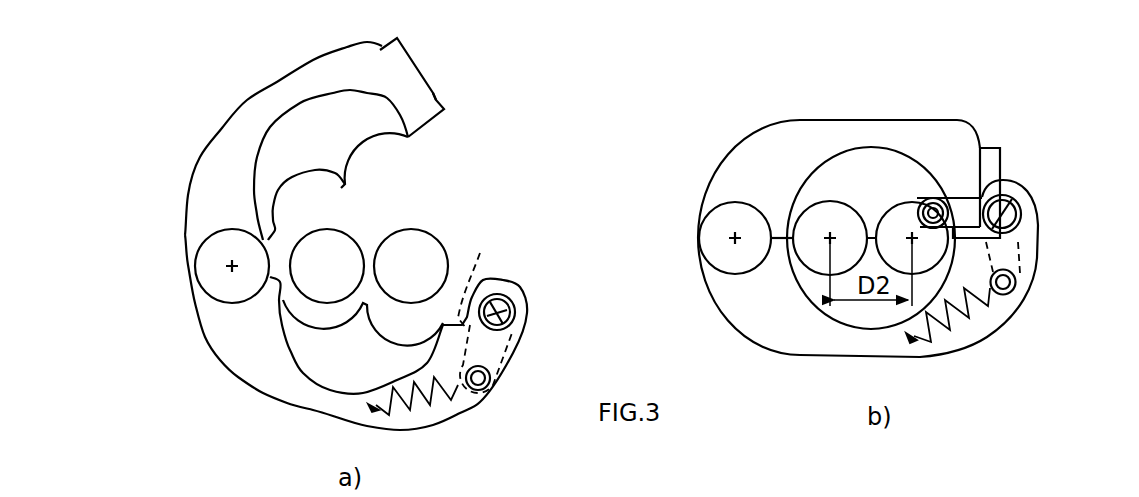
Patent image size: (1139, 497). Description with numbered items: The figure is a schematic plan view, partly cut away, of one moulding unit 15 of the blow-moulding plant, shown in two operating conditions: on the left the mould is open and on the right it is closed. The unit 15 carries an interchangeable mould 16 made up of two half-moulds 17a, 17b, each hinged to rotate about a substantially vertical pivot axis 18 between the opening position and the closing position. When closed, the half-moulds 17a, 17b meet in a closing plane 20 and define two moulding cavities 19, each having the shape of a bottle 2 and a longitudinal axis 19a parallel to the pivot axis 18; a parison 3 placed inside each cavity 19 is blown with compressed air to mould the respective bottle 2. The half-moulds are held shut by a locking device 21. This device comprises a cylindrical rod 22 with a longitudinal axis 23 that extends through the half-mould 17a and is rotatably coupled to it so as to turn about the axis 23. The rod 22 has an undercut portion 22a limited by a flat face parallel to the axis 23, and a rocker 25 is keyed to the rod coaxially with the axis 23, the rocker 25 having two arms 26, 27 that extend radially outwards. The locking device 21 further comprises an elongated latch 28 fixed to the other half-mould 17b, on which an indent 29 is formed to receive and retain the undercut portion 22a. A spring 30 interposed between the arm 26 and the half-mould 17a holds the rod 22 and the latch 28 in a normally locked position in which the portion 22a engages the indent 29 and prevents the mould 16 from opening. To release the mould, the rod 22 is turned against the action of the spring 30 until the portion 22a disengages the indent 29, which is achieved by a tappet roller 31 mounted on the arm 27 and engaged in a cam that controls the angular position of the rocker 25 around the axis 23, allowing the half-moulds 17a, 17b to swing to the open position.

The plastic bottle 2 is at (330, 250).
The parison 3 is at (412, 250).
The unit 15 is at (181, 365).
The interchangeable mould 16 is at (174, 339).
The half-mould 17a is at (245, 367).
The half-mould 17b is at (207, 177).
The pivot axis 18 is at (227, 272).
The moulding cavity 19 is at (898, 218).
The longitudinal axis 19a is at (823, 243).
The closing plane 20 is at (778, 226).
The locking device 21 is at (458, 78).
The cylindrical rod 22 is at (498, 293).
The undercut portion 22a is at (503, 312).
The longitudinal axis 23 is at (508, 363).
The rocker 25 is at (520, 345).
The arm 26 is at (1083, 258).
The arm 27 is at (952, 185).
The latch 28 is at (413, 68).
The indent 29 is at (440, 97).
The spring 30 is at (440, 398).
The tappet roller 31 is at (927, 197).